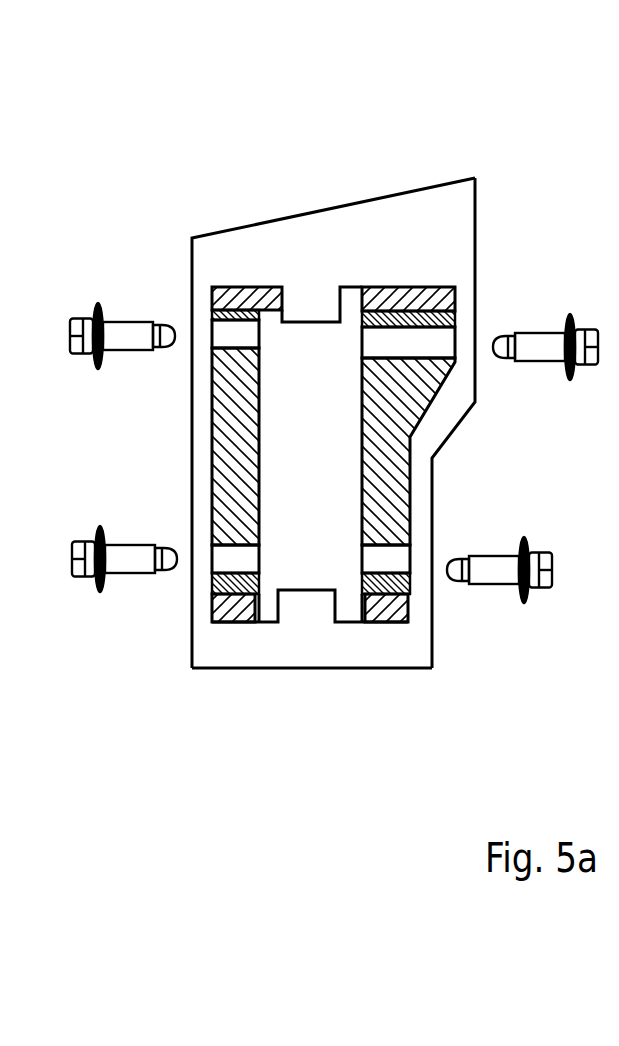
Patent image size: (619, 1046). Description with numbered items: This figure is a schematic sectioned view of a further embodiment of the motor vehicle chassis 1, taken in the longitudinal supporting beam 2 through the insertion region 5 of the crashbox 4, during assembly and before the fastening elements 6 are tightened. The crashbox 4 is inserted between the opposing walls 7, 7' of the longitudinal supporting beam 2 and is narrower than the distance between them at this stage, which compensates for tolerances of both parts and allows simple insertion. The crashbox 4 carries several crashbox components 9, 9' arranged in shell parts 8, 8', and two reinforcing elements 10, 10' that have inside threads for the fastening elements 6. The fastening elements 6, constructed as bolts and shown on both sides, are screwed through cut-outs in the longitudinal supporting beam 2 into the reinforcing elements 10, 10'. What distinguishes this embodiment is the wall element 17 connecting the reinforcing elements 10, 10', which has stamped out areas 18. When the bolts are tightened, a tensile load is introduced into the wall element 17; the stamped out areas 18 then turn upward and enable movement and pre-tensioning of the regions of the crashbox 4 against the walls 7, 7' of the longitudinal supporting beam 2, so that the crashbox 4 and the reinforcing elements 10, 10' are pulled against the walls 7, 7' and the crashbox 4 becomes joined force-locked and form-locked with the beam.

The motor vehicle chassis 1 is at (404, 423).
The longitudinal supporting beam 2 is at (304, 668).
The crashbox 4 is at (396, 220).
The insertion region 5 is at (450, 700).
The fastening elements 6 is at (77, 318).
The wall 7 is at (450, 353).
The wall 7' is at (181, 352).
The shell part 8 is at (450, 389).
The shell part 8' is at (169, 388).
The crashbox component 9 is at (385, 710).
The crashbox component 9' is at (220, 710).
The reinforcing element 10 is at (457, 451).
The reinforcing element 10' is at (160, 446).
The wall element 17 is at (233, 228).
The stamped out areas 18 is at (327, 242).